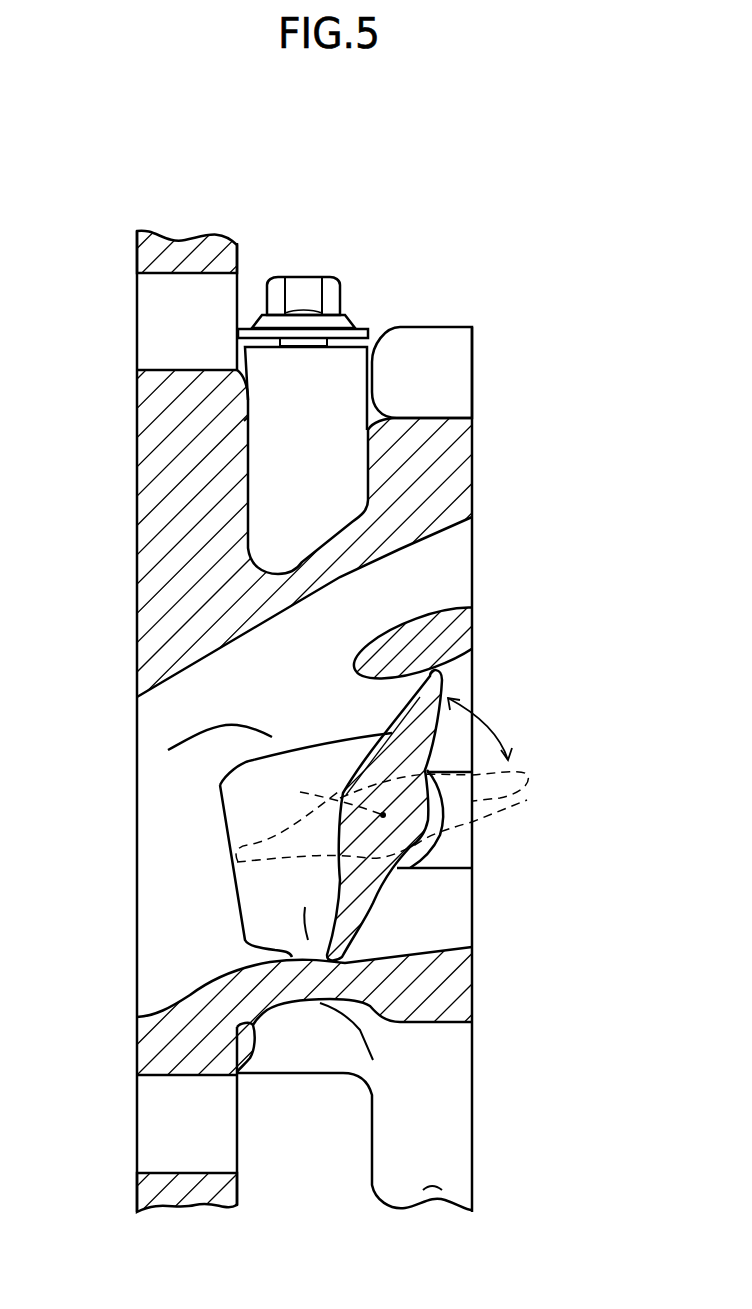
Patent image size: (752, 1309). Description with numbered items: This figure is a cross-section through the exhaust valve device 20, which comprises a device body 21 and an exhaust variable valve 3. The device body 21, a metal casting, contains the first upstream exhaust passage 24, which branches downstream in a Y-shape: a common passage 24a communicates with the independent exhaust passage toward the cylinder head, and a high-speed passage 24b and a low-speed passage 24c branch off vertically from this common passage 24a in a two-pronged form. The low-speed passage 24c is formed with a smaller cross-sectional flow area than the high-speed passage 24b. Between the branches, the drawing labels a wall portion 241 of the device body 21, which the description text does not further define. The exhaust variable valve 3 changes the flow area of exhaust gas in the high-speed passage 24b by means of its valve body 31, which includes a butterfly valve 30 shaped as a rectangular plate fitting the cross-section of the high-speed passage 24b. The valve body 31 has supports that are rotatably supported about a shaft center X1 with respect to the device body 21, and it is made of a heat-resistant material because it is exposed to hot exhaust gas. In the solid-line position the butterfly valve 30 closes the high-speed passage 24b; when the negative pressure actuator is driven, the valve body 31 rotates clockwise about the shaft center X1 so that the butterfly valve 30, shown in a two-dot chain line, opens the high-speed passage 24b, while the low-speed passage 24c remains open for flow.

The exhaust valve device 20 is at (376, 654).
The device body 21 is at (443, 323).
The first upstream exhaust passage 24 is at (158, 755).
The common passage 24a is at (155, 922).
The high-speed passage 24b is at (455, 918).
The low-speed passage 24c is at (455, 590).
The nozzle vane 241 is at (475, 642).
The exhaust variable valve 3 is at (376, 819).
The butterfly valve 30 is at (350, 937).
The valve body 31 is at (452, 838).
The shaft center X1 is at (324, 794).